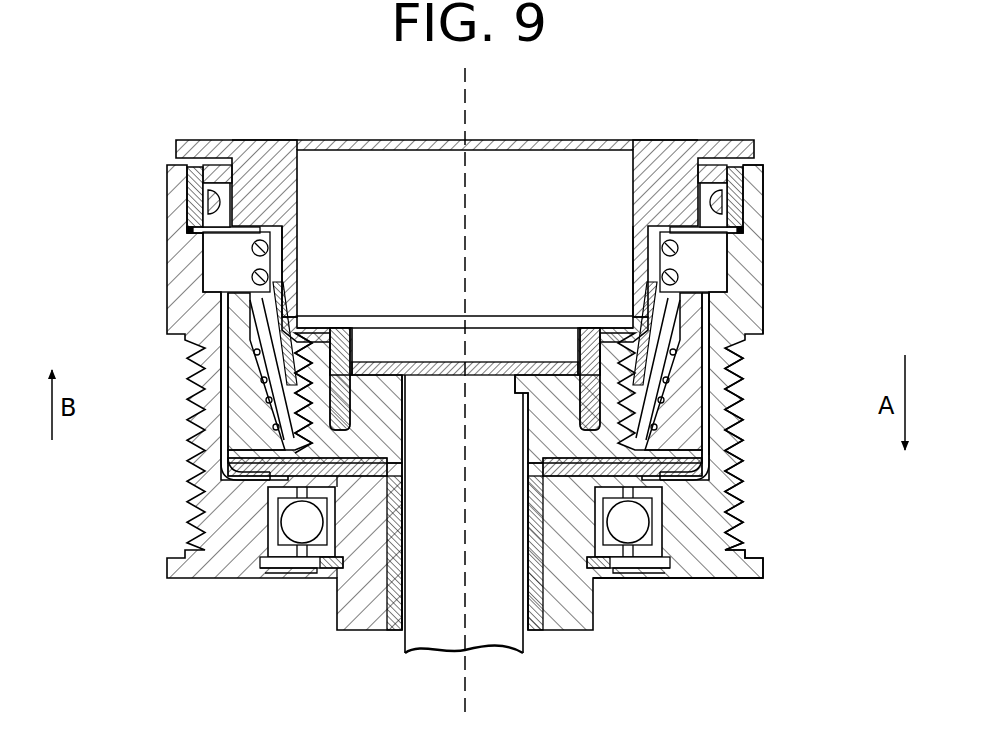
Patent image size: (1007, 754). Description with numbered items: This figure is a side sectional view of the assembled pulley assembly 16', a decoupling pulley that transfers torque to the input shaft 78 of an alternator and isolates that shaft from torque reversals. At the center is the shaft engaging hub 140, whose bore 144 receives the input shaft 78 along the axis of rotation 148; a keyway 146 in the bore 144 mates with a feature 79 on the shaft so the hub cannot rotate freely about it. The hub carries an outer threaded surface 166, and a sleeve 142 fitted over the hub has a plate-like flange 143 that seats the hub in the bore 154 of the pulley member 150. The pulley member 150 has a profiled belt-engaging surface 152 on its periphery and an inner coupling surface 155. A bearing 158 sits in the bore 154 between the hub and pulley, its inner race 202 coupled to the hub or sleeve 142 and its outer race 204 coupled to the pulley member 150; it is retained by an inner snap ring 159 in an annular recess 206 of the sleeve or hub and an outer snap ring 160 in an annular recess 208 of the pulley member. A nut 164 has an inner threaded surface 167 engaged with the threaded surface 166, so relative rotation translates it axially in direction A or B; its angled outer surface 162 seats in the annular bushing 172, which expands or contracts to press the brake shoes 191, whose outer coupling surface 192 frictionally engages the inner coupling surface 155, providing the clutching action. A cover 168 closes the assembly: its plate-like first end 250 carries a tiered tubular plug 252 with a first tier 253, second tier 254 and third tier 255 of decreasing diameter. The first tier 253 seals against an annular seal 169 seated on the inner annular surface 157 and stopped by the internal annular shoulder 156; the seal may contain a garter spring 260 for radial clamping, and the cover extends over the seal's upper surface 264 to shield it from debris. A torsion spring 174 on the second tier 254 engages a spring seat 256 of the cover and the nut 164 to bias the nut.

The pulley assembly 16' is at (884, 191).
The input shaft 78 is at (412, 641).
The feature 79 is at (511, 397).
The shaft engaging hub 140 is at (408, 378).
The sleeve 142 is at (575, 633).
The flange 143 is at (708, 471).
The bore 144 is at (416, 375).
The keyway 146 is at (532, 405).
The axis of rotation 148 is at (467, 96).
The pulley member 150 is at (744, 500).
The belt-engaging surface 152 is at (744, 518).
The bore 154 is at (206, 262).
The inner coupling surface 155 is at (716, 322).
The internal annular shoulder 156 is at (190, 230).
The inner annular surface 157 is at (190, 184).
The bearing 158 is at (297, 564).
The inner snap ring 159 is at (616, 570).
The outer snap ring 160 is at (662, 570).
The outer surface 162 is at (682, 365).
The nut 164 is at (300, 290).
The outer threaded surface 166 is at (598, 348).
The inner threaded surface 167 is at (302, 332).
The cover 168 is at (657, 152).
The annular seal 169 is at (760, 170).
The annular bushing 172 is at (263, 378).
The spring 174 is at (726, 256).
The brake shoes 191 is at (240, 426).
The outer coupling surface 192 is at (708, 386).
The inner race 202 is at (320, 570).
The outer race 204 is at (268, 548).
The annular recess 206 is at (340, 562).
The annular recess 208 is at (672, 578).
The first end 250 is at (718, 140).
The plug 252 is at (632, 234).
The first tier 253 is at (239, 146).
The second tier 254 is at (288, 245).
The third tier 255 is at (358, 342).
The spring seat 256 is at (258, 227).
The garter spring 260 is at (728, 199).
The upper surface 264 is at (207, 170).